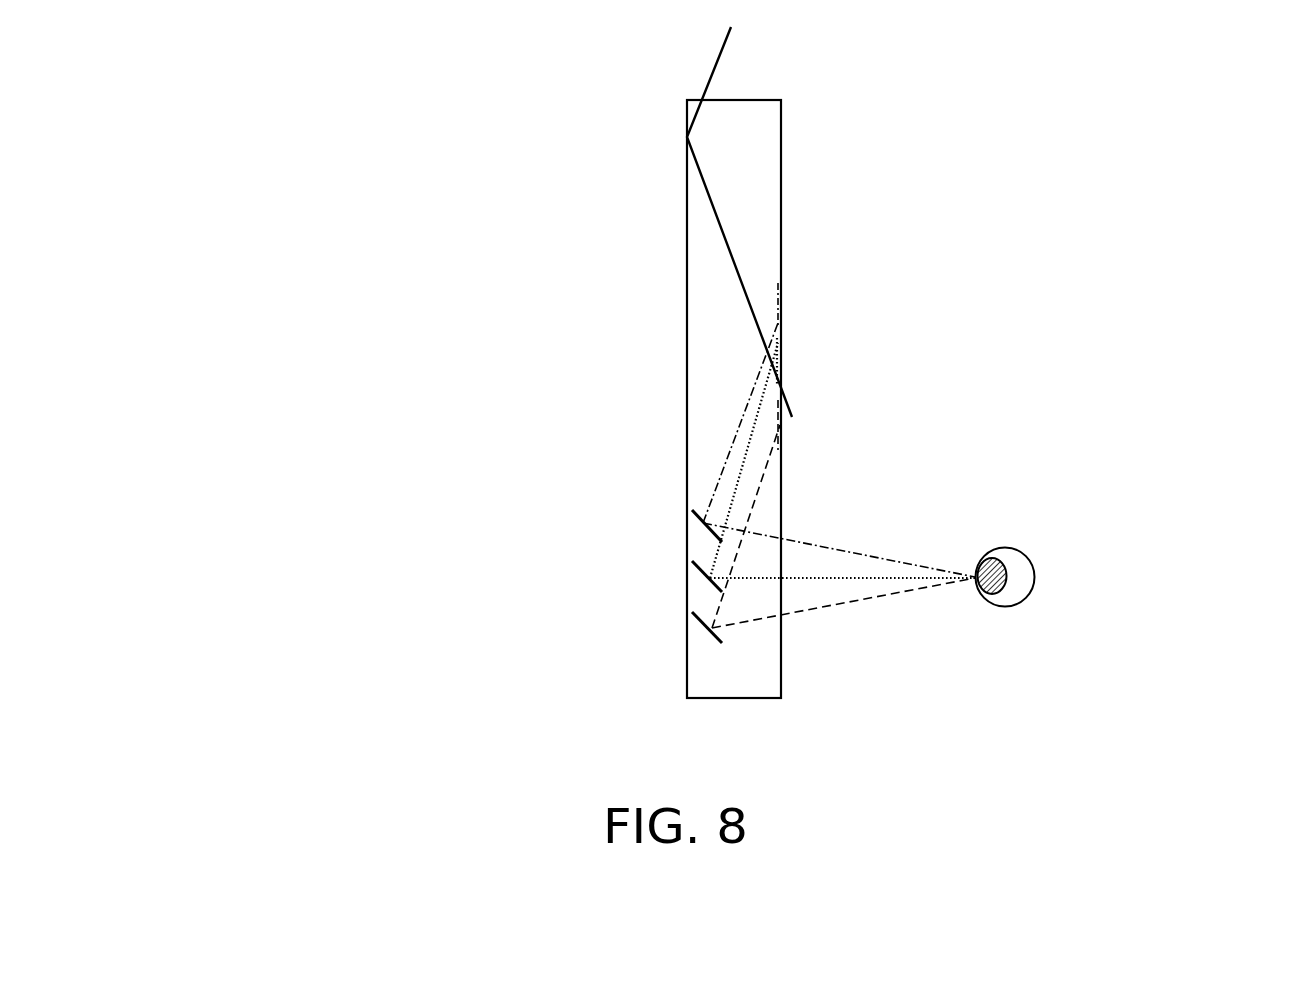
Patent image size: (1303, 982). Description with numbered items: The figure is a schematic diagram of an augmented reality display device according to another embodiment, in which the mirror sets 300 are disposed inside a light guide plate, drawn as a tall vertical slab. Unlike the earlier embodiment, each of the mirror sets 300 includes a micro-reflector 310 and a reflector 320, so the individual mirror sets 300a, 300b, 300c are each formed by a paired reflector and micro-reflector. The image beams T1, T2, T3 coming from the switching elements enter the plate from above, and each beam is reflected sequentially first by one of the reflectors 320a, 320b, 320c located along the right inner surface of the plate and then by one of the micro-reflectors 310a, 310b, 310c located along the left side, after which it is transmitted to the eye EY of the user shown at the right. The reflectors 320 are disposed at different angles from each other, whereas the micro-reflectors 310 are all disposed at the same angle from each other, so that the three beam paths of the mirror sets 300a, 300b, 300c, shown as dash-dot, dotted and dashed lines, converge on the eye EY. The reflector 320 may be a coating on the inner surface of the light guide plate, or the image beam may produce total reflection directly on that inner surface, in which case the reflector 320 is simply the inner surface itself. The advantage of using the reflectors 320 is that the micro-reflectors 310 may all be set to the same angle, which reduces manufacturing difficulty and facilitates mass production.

The image beam T1 is at (865, 222).
The image beam T2 is at (865, 222).
The image beam T3 is at (722, 57).
The mirror set 300 is at (839, 475).
The mirror set 300a is at (843, 526).
The mirror set 300b is at (842, 460).
The mirror set 300c is at (839, 450).
The micro-reflector 310 is at (457, 565).
The micro-reflector 310a is at (705, 623).
The micro-reflector 310b is at (705, 568).
The micro-reflector 310c is at (705, 530).
The reflector 320 is at (1026, 386).
The reflector 320a is at (781, 447).
The reflector 320b is at (781, 365).
The reflector 320c is at (781, 308).
The eye EY is at (1035, 577).